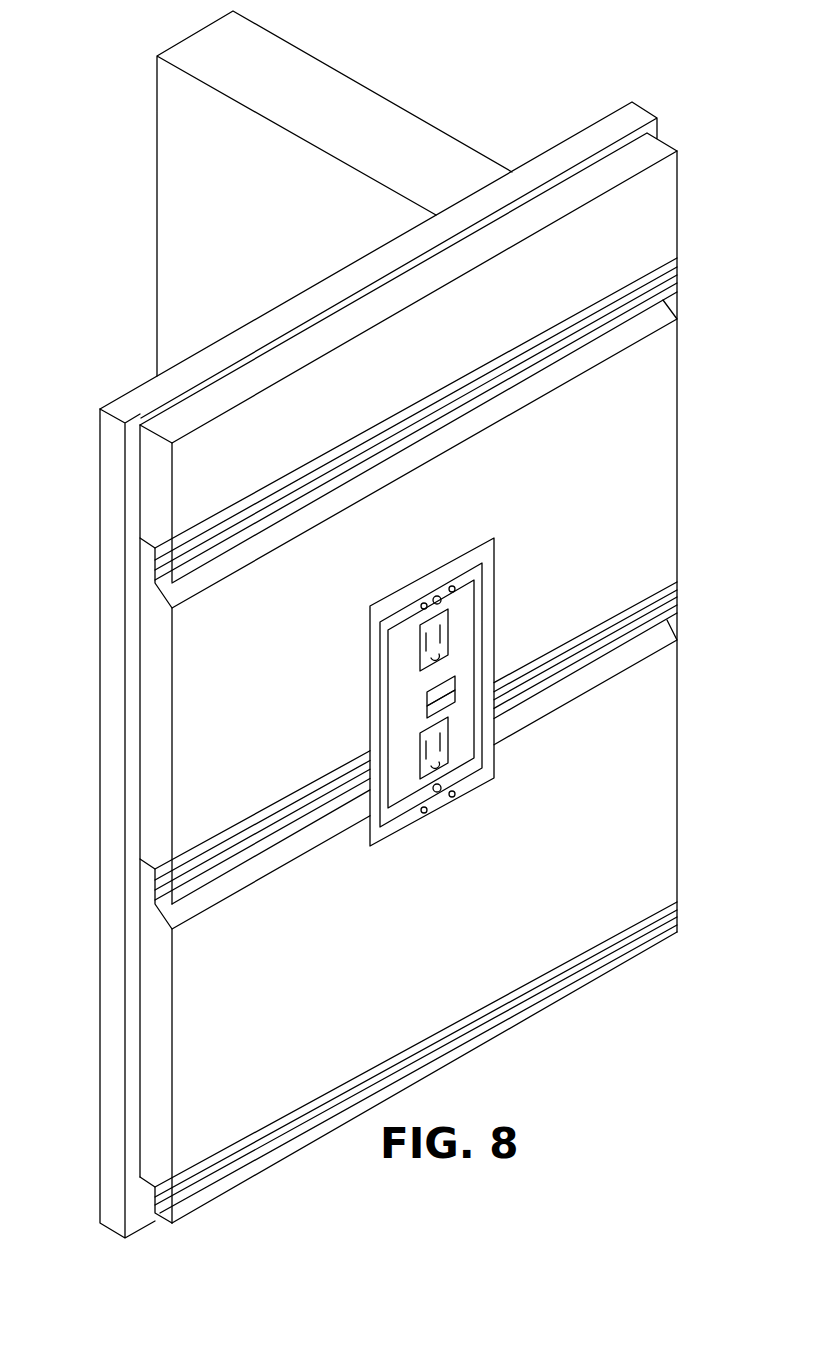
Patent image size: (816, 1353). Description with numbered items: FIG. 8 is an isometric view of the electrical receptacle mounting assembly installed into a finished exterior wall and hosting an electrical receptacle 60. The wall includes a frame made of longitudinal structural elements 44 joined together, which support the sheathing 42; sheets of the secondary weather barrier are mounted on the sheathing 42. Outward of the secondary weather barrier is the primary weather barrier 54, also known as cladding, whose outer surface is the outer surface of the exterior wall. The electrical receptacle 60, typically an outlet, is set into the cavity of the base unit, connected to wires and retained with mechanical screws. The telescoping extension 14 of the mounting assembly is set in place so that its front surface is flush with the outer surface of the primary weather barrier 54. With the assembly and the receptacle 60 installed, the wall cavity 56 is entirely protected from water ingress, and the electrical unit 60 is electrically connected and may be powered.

The telescoping extension 14 is at (440, 692).
The sheathing 42 is at (100, 817).
The longitudinal structural element 44 is at (397, 104).
The primary weather barrier 54 is at (678, 222).
The wall cavity 56 is at (389, 670).
The electrical receptacle 60 is at (405, 705).